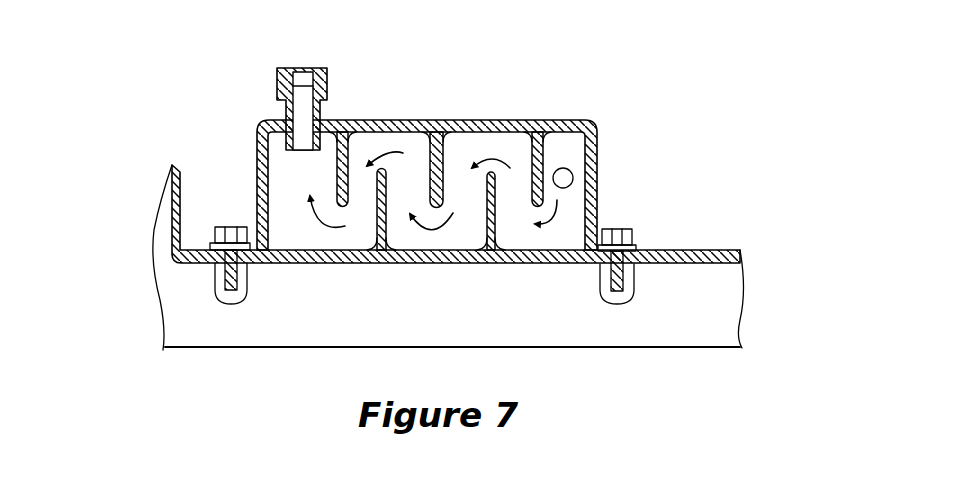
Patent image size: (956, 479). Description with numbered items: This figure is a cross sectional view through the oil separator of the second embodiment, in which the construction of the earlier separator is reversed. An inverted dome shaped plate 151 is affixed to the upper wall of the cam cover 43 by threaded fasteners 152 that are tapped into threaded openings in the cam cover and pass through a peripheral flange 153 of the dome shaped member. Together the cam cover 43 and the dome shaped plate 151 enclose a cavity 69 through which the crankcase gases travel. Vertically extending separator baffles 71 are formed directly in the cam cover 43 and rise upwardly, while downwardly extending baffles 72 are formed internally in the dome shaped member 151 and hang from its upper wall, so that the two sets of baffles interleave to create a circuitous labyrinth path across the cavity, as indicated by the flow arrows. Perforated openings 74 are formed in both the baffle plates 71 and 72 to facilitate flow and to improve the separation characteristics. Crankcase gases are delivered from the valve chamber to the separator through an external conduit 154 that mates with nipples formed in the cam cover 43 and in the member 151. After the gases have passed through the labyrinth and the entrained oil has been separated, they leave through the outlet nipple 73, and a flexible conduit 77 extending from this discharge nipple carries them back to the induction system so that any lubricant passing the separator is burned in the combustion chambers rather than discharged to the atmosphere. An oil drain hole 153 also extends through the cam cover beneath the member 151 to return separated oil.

The cam cover 43 is at (170, 203).
The cavity 69 is at (487, 120).
The separator baffles 71 is at (376, 215).
The downwardly extending baffles 72 is at (382, 120).
The outlet nipple 73 is at (290, 110).
The perforations 74 is at (330, 117).
The flexible conduit 77 is at (308, 70).
The inverted dome shaped plate 151 is at (518, 120).
The threaded fasteners 152 is at (228, 227).
The peripheral flange 153 is at (640, 250).
The external conduit 154 is at (566, 185).